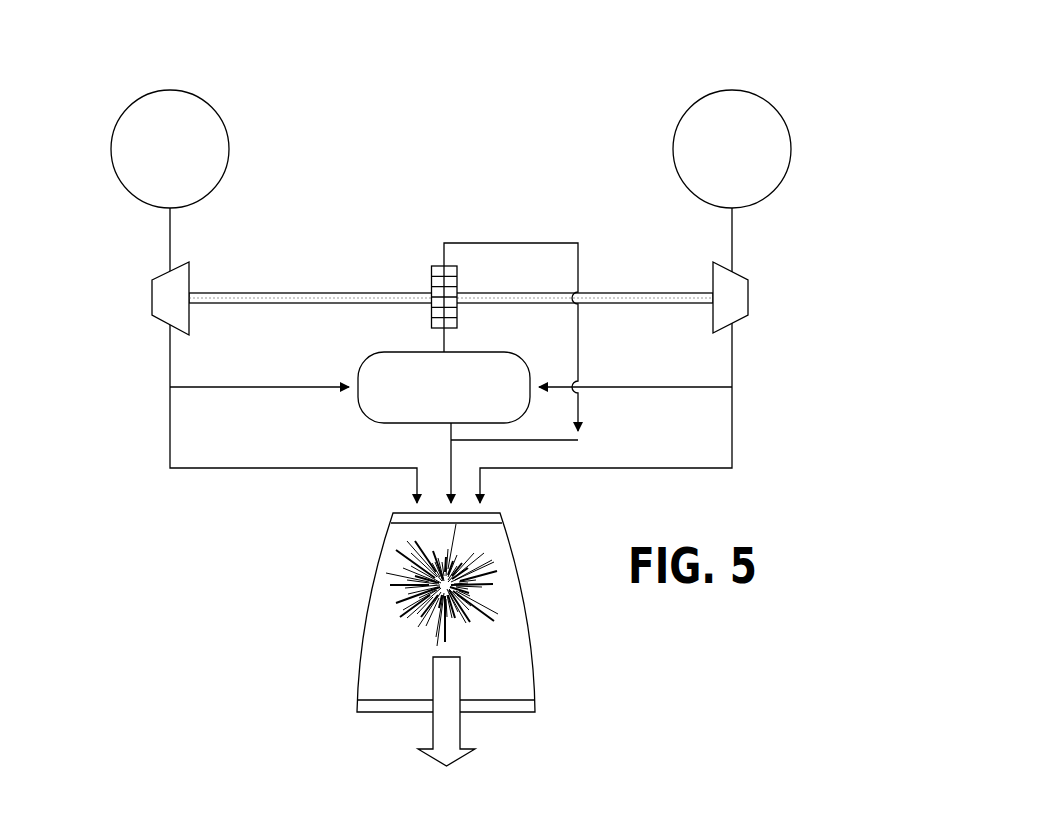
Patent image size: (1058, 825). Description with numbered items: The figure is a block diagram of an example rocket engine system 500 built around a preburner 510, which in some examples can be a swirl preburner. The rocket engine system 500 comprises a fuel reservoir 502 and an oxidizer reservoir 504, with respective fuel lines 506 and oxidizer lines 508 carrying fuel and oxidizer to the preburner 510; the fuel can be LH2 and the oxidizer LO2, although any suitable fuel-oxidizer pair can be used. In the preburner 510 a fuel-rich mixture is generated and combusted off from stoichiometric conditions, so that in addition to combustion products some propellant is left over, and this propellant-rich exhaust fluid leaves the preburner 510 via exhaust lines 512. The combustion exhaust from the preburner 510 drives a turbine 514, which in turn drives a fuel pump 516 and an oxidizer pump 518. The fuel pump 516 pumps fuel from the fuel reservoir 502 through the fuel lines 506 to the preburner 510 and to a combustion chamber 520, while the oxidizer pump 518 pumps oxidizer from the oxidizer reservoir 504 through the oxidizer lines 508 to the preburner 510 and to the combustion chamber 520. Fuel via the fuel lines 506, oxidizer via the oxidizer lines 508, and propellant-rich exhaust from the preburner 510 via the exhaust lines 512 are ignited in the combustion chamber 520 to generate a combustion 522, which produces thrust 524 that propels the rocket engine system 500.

The rocket engine system 500 is at (818, 82).
The fuel reservoir 502 is at (113, 155).
The oxidizer reservoir 504 is at (790, 155).
The fuel lines 506 is at (170, 433).
The oxidizer lines 508 is at (732, 425).
The preburner 510 is at (358, 405).
The exhaust lines 512 is at (520, 243).
The turbine 514 is at (431, 313).
The fuel pump 516 is at (152, 297).
The oxidizer pump 518 is at (748, 297).
The combustion chamber 520 is at (367, 613).
The combustion 522 is at (520, 584).
The thrust 524 is at (433, 721).